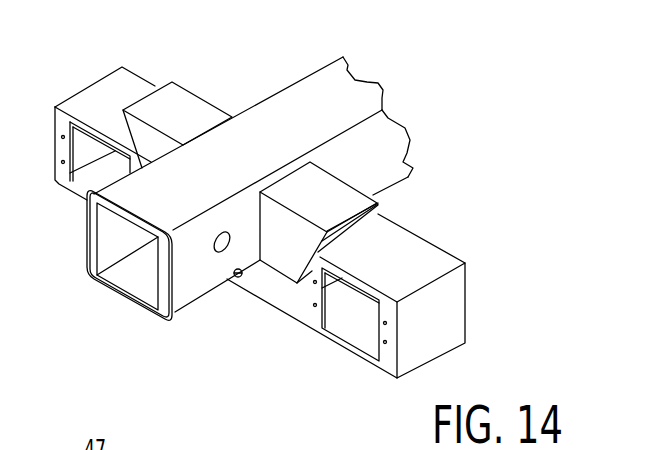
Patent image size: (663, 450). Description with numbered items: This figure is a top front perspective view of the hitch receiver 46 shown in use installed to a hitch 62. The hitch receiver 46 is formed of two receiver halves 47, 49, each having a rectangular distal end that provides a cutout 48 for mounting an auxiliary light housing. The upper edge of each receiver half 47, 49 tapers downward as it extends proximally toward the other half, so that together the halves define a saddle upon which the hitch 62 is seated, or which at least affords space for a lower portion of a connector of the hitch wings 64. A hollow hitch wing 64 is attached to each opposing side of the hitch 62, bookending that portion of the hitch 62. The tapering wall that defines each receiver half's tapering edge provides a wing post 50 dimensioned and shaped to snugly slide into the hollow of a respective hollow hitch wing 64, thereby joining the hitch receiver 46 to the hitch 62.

The hitch receiver 46 is at (467, 200).
The receiver half 47 is at (112, 82).
The cutout 48 is at (86, 133).
The receiver half 49 is at (456, 304).
The wing post 50 is at (366, 218).
The hitch 62 is at (118, 293).
The hollow hitch wing 64 is at (187, 103).